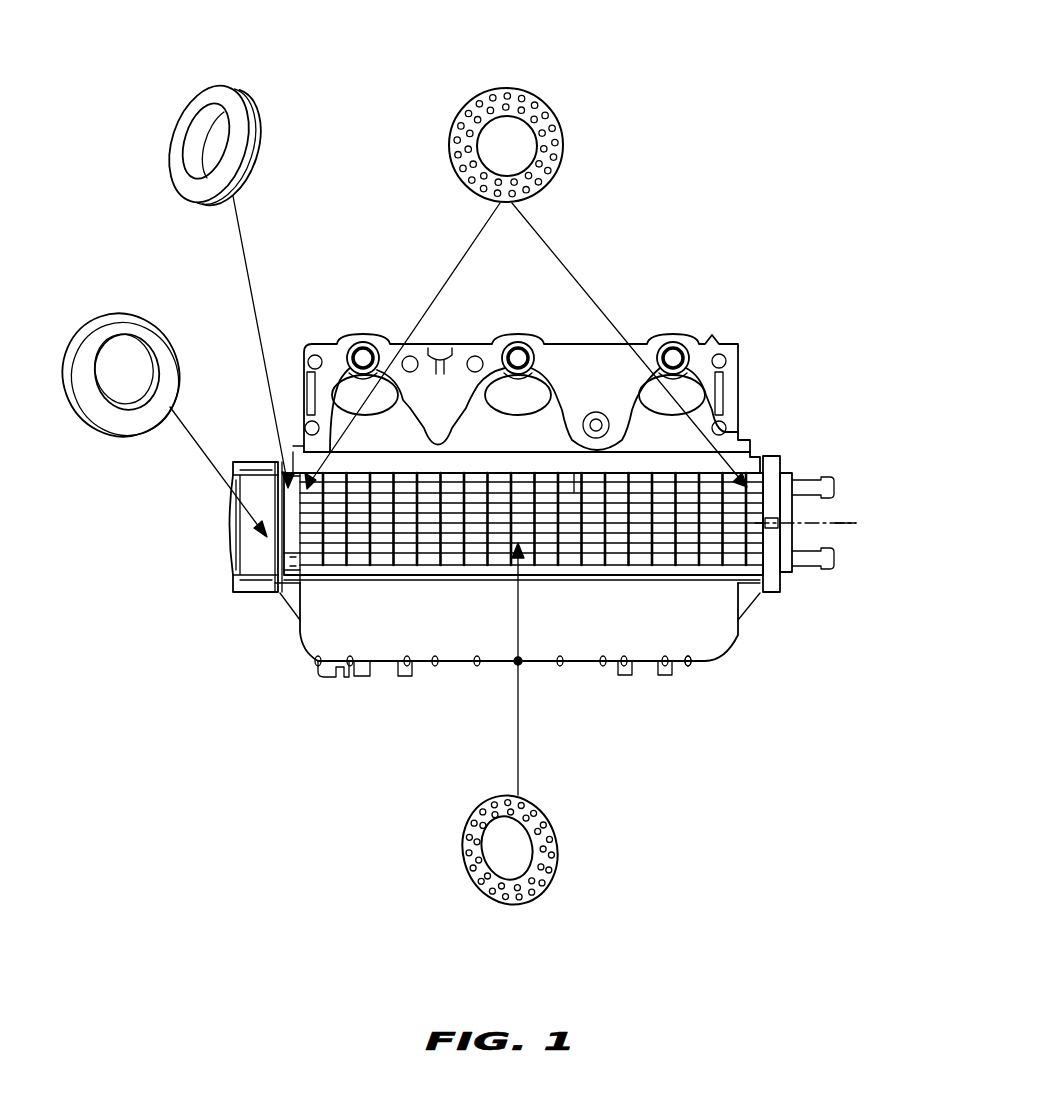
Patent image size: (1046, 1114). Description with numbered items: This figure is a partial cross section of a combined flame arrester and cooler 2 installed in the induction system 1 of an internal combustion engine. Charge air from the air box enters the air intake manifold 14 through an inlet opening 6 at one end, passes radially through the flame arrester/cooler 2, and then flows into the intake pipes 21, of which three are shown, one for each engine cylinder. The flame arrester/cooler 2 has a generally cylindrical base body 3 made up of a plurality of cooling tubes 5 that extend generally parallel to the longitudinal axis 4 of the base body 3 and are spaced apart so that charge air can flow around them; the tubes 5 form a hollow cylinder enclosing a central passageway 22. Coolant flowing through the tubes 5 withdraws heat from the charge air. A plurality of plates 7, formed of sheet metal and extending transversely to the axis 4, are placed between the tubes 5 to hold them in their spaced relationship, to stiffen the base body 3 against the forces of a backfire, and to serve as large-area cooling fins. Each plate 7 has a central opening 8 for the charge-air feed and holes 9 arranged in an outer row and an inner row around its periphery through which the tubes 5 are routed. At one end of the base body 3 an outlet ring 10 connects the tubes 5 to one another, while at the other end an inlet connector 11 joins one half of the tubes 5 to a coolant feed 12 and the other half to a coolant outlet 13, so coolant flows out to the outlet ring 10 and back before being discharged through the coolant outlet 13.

The induction system 1 is at (752, 628).
The combined flame arrester and cooler 2 is at (640, 562).
The base body 3 is at (407, 677).
The axis 4 is at (852, 523).
The cooling tubes 5 is at (583, 535).
The inlet opening 6 is at (233, 541).
The plates 7 is at (560, 148).
The central opening 8 is at (510, 125).
The holes 9 is at (485, 92).
The outlet ring 10 is at (250, 98).
The inlet connector 11 is at (810, 463).
The coolant feed 12 is at (835, 488).
The coolant outlet 13 is at (807, 571).
The air intake manifold 14 is at (710, 663).
The intake pipes 21 is at (343, 383).
The central passageway 22 is at (574, 490).